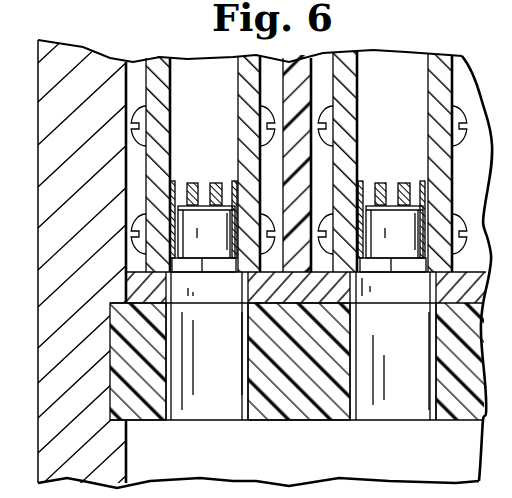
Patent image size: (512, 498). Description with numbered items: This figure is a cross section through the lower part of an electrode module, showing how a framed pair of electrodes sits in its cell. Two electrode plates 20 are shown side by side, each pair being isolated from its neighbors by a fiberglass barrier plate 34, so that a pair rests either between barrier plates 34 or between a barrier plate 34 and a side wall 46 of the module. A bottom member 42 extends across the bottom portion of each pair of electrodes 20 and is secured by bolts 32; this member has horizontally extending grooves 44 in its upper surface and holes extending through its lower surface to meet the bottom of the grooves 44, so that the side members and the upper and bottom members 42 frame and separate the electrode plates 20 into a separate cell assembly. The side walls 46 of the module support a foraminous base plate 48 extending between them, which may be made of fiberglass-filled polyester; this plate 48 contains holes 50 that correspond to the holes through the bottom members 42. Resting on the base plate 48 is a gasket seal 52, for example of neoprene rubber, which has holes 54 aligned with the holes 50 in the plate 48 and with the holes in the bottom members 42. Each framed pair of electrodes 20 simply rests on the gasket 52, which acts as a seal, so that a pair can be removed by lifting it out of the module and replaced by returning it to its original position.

The electrode plate 20 is at (238, 95).
The bolt 32 is at (463, 141).
The barrier plate 34 is at (300, 60).
The bottom member 42 is at (198, 257).
The groove 44 is at (208, 186).
The side wall 46 is at (95, 62).
The base plate 48 is at (314, 415).
The hole 50 is at (232, 383).
The gasket seal 52 is at (485, 270).
The hole 54 is at (422, 299).